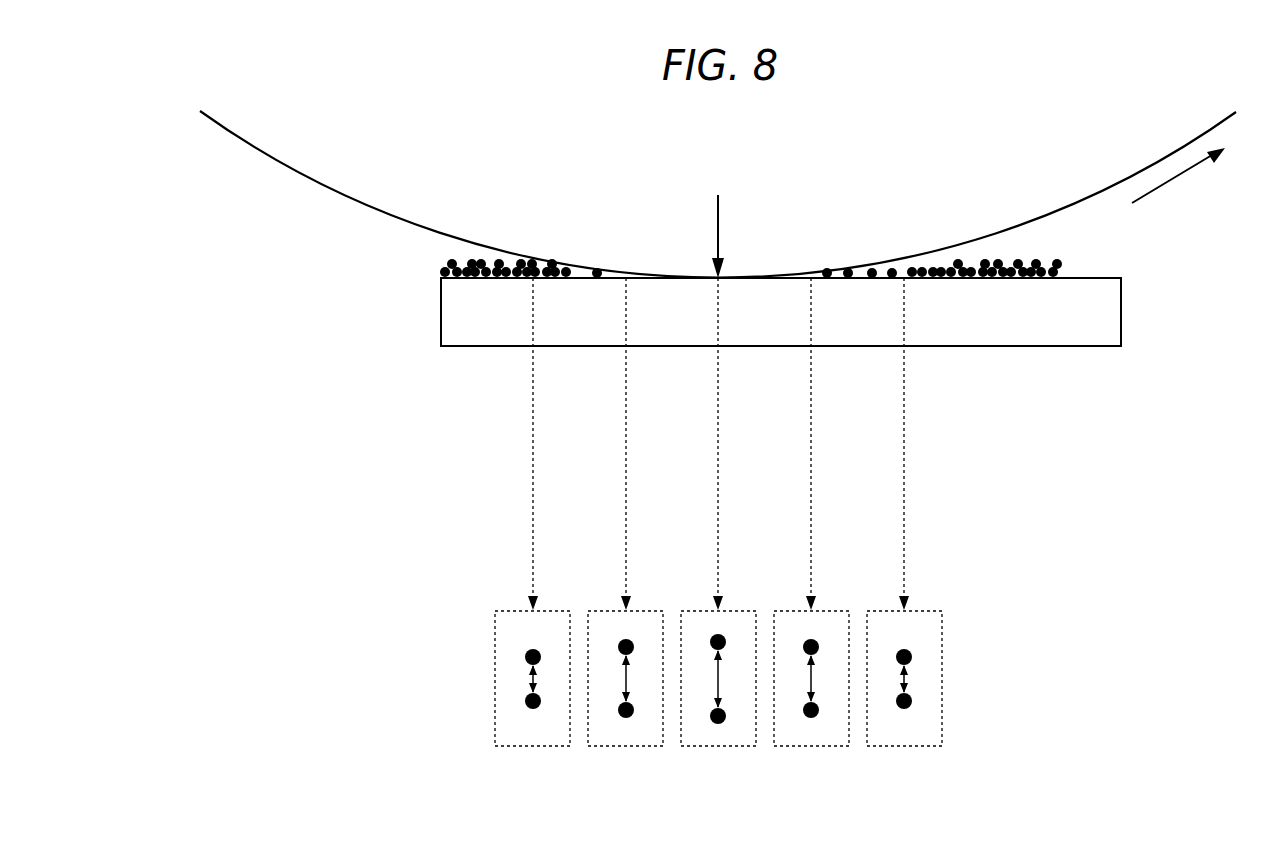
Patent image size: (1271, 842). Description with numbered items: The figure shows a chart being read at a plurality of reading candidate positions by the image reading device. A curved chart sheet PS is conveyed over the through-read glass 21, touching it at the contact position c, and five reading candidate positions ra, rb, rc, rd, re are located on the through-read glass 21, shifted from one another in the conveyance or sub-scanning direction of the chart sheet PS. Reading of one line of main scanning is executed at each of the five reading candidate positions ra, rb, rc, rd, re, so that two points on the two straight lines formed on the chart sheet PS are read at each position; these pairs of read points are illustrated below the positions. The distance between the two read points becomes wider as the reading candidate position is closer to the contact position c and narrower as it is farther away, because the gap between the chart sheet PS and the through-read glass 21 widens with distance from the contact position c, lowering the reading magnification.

The chart sheet PS is at (293, 170).
The contact position c is at (718, 258).
The through-read glass 21 is at (1077, 346).
The reading candidate position ra is at (533, 279).
The reading candidate position rb is at (626, 279).
The reading candidate position rc is at (718, 279).
The reading candidate position rd is at (811, 279).
The reading candidate position re is at (904, 279).